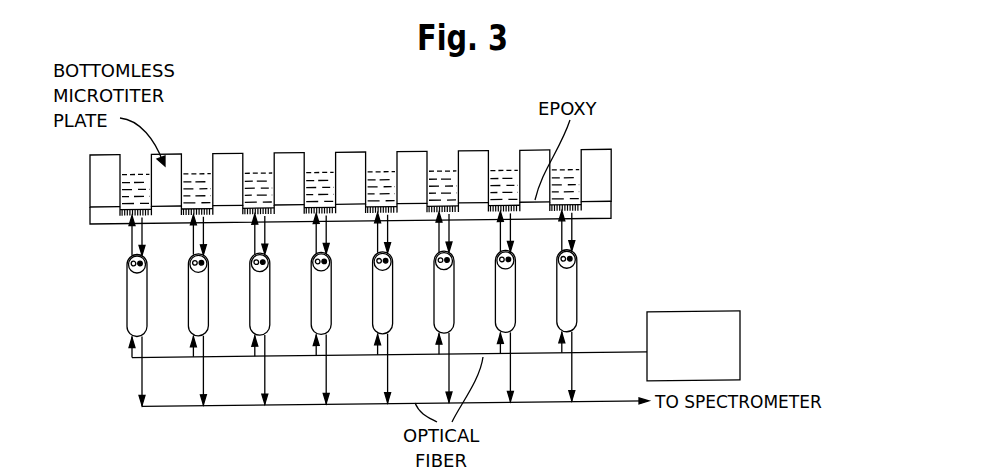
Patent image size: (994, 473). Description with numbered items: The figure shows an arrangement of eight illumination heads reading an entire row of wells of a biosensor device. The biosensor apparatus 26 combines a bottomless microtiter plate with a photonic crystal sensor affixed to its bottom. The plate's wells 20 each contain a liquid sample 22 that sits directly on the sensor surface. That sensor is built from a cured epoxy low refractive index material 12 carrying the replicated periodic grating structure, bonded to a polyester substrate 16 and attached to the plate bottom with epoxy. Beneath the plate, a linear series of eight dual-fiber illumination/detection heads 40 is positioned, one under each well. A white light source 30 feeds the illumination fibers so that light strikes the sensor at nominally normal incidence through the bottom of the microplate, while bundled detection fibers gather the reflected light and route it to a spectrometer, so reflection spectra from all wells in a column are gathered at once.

The low refractive index material 12 is at (497, 207).
The substrate 16 is at (612, 213).
The wells 20 is at (604, 158).
The liquid sample 22 is at (200, 160).
The biosensor apparatus 26 is at (673, 163).
The white light source 30 is at (740, 344).
The illumination/detection heads 40 is at (577, 280).